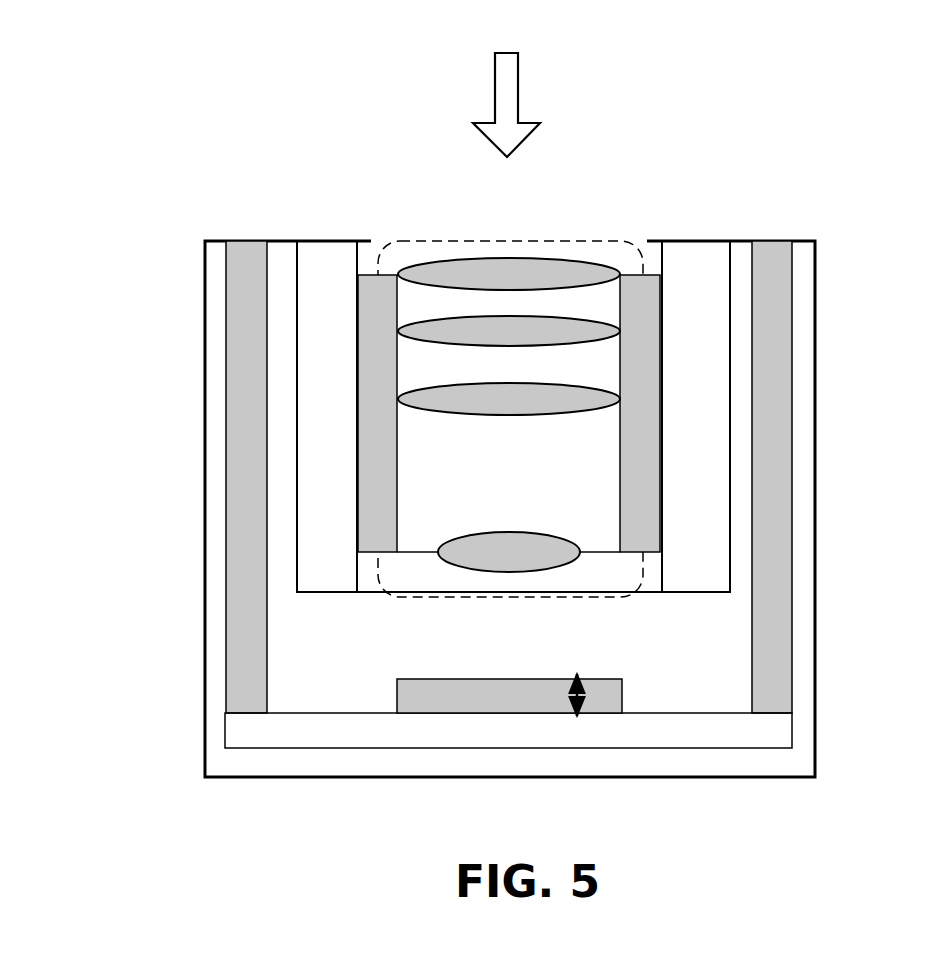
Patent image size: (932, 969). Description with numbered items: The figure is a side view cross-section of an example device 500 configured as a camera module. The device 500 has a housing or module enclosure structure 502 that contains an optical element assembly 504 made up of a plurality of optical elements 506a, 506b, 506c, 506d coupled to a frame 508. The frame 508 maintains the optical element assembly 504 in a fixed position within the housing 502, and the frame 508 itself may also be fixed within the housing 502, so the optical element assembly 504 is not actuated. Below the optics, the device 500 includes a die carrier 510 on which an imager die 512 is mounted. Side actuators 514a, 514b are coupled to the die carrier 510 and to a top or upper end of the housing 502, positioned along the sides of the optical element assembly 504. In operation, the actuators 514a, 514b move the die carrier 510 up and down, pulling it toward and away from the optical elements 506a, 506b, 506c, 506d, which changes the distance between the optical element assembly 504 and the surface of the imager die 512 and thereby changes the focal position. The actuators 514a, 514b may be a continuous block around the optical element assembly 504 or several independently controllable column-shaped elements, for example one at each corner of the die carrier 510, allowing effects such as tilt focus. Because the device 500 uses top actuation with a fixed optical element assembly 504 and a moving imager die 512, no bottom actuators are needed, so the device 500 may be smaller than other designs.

The device 500 is at (825, 158).
The housing 502 is at (205, 262).
The optical element assembly 504 is at (509, 382).
The optical element 506a is at (509, 274).
The optical element 506b is at (509, 331).
The optical element 506c is at (509, 399).
The optical element 506d is at (509, 552).
The frame 508 is at (513, 416).
The die carrier 510 is at (508, 730).
The imager die 512 is at (509, 695).
The side actuator 514a is at (228, 461).
The side actuator 514b is at (791, 460).